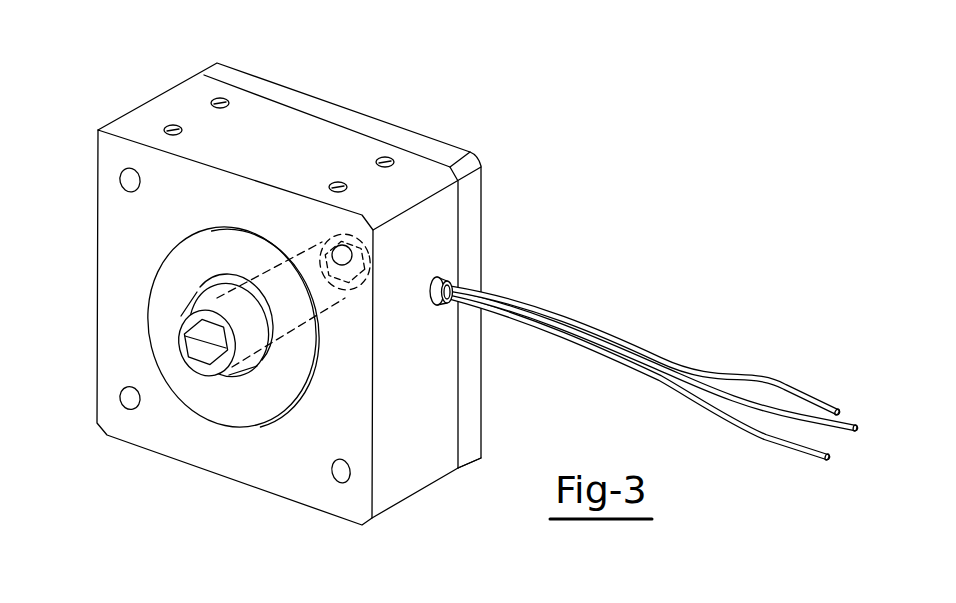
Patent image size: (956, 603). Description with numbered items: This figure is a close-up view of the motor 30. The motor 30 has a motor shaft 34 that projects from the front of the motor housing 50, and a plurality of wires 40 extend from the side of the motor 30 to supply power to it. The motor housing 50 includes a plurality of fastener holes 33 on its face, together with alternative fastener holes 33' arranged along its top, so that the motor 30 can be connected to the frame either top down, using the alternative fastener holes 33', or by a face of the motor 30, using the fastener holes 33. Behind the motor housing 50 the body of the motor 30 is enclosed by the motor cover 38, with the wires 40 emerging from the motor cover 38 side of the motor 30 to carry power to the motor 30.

The motor 30 is at (453, 138).
The fastener holes 33 is at (226, 325).
The alternative fastener holes 33' is at (225, 114).
The motor shaft 34 is at (228, 312).
The motor cover 38 is at (475, 215).
The wires 40 is at (577, 332).
The motor housing 50 is at (243, 460).